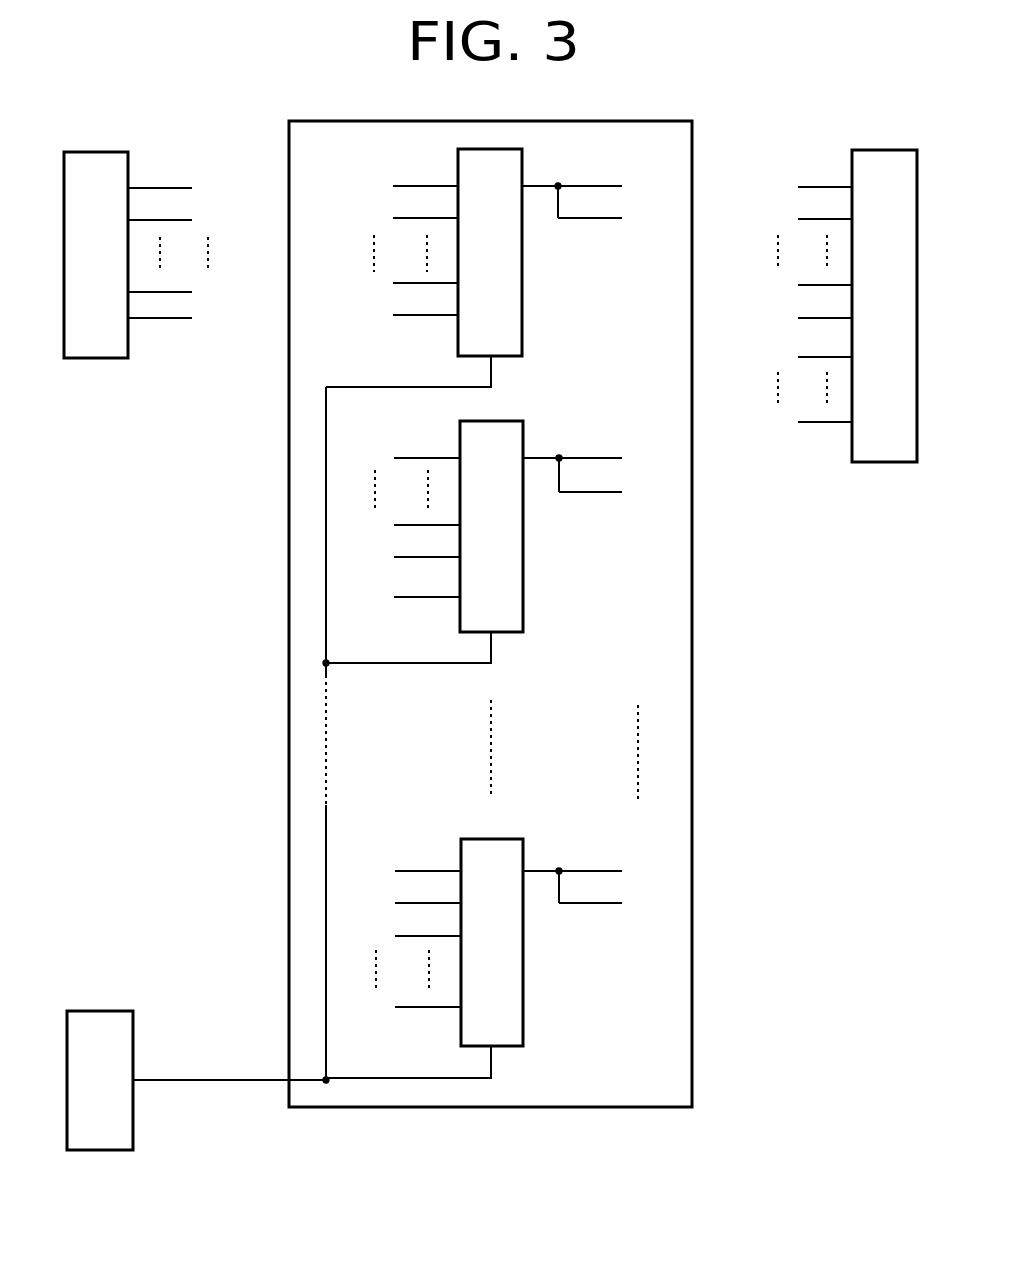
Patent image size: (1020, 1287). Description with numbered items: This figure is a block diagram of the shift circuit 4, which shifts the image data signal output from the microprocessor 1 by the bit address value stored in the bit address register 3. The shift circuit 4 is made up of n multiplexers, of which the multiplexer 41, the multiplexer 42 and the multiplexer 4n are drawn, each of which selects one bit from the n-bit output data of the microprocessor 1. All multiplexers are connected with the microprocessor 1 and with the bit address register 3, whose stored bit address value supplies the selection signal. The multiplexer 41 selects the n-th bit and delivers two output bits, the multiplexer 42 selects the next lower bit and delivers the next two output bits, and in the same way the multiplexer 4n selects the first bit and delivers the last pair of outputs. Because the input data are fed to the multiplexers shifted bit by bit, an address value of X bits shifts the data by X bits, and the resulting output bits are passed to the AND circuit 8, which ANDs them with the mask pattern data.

The microprocessor 1 is at (100, 152).
The bit address register 3 is at (100, 1011).
The shift circuit 4 is at (598, 121).
The AND circuit 8 is at (870, 150).
The multiplexer 41 is at (487, 149).
The multiplexer 42 is at (488, 421).
The multiplexer 4n is at (488, 839).